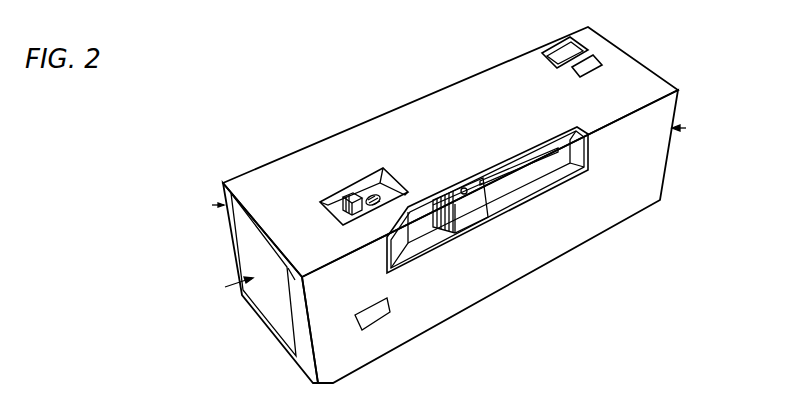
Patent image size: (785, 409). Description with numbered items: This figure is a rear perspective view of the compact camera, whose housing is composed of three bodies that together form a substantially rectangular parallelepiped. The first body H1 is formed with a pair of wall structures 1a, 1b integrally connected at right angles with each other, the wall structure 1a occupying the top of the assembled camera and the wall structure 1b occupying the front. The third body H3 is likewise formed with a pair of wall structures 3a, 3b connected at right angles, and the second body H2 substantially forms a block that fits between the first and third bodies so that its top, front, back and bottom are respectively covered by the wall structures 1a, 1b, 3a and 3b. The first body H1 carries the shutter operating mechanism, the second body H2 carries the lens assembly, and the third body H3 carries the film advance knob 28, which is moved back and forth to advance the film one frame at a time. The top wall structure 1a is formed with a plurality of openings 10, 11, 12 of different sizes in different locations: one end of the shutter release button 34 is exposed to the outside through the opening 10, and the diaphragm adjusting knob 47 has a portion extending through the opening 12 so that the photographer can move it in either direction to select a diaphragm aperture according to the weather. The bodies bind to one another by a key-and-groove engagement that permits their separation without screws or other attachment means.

The wall structure 1a is at (650, 70).
The wall structure 1b is at (232, 238).
The wall structure 3a is at (647, 182).
The wall structure 3b is at (258, 320).
The opening 10 is at (566, 44).
The opening 11 is at (600, 62).
The opening 12 is at (372, 196).
The film advance knob 28 is at (475, 213).
The shutter release button 34 is at (573, 50).
The diaphragm adjusting knob 47 is at (350, 200).
The first body H1 is at (204, 202).
The second body H2 is at (224, 288).
The third body H3 is at (697, 128).